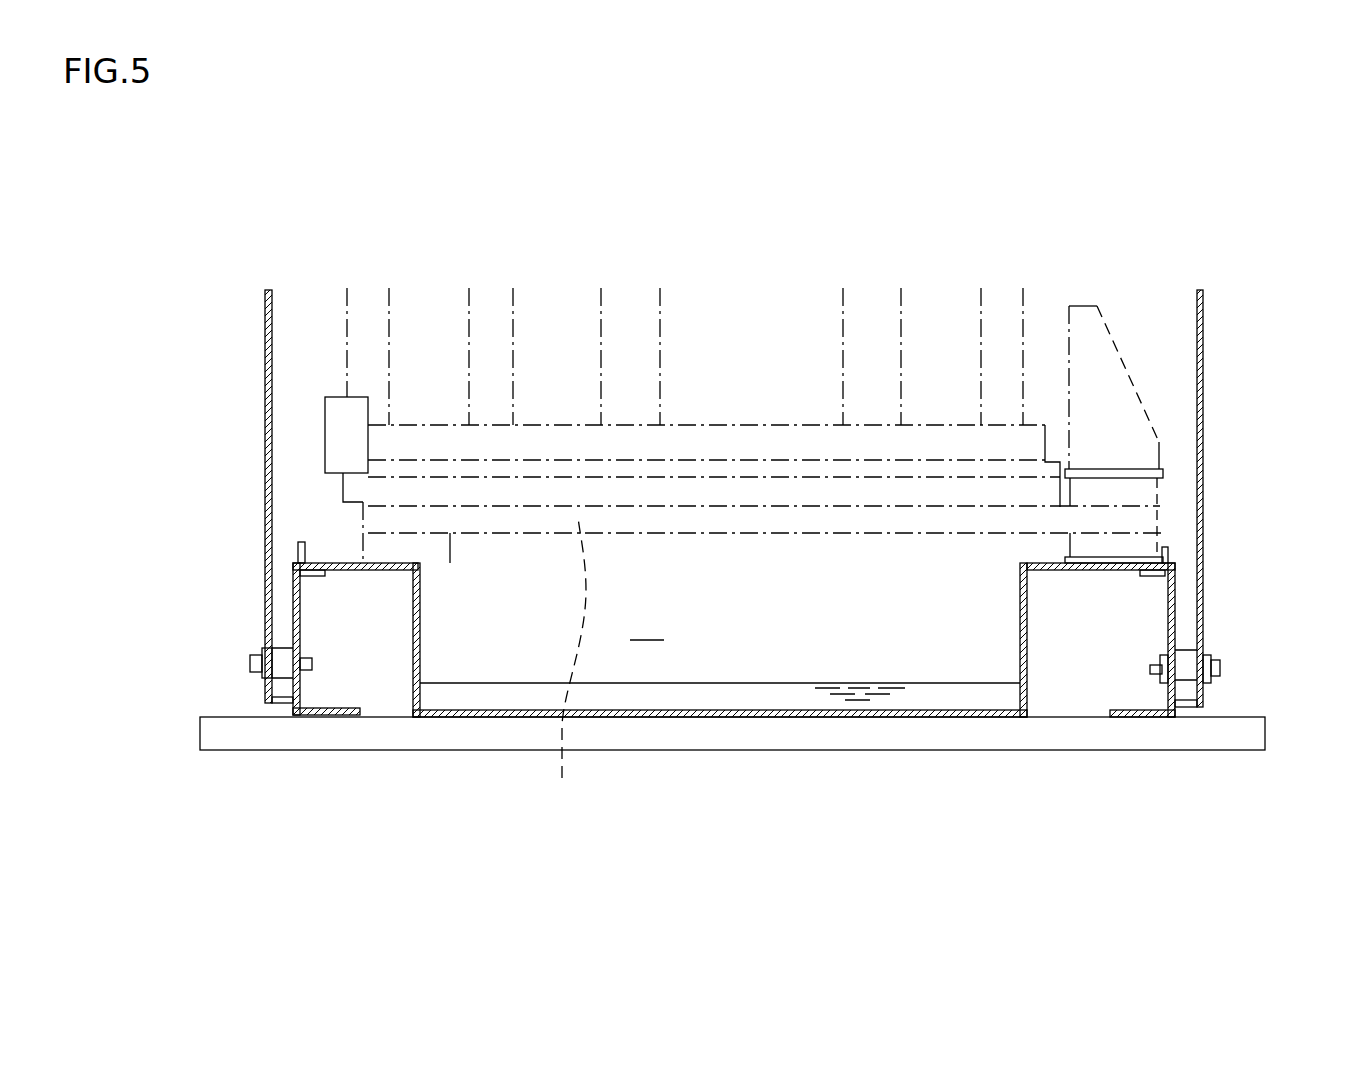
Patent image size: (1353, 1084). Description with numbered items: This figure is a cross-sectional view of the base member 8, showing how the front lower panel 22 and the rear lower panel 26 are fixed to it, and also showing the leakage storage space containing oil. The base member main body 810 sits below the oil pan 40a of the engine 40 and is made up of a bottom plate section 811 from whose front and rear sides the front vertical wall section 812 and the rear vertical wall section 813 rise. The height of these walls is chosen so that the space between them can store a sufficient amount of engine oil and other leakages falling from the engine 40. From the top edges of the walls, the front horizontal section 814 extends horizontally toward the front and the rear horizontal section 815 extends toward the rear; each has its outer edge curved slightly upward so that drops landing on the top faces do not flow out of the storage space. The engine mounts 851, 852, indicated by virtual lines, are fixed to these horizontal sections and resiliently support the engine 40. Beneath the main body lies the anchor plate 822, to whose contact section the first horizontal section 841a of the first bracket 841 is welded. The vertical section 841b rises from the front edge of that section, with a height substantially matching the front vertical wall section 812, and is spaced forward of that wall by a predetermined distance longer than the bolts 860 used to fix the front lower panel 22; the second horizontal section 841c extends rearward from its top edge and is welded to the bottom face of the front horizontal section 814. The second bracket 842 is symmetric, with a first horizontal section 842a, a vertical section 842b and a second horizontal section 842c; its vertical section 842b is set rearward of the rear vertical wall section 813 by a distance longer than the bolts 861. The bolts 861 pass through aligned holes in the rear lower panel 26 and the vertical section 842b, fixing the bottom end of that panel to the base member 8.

The base member 8 is at (736, 688).
The front lower panel 22 is at (1203, 368).
The rear lower panel 26 is at (265, 365).
The engine 40 is at (1023, 312).
The oil pan 40a is at (572, 666).
The base member main body 810 is at (768, 722).
The bottom plate section 811 is at (720, 689).
The front vertical wall section 812 is at (1020, 660).
The rear vertical wall section 813 is at (420, 652).
The front horizontal section 814 is at (1125, 567).
The rear horizontal section 815 is at (338, 560).
The anchor plate 822 is at (1066, 742).
The first bracket 841 is at (1172, 640).
The first horizontal section 841a is at (1143, 710).
The vertical section 841b is at (1175, 620).
The second horizontal section 841c is at (1158, 578).
The second bracket 842 is at (286, 639).
The first horizontal section 842a is at (343, 710).
The vertical section 842b is at (296, 619).
The second horizontal section 842c is at (323, 575).
The engine mount 851 is at (363, 513).
The engine mount 852 is at (1160, 496).
The bolts 860 is at (1220, 668).
The bolts 861 is at (250, 663).